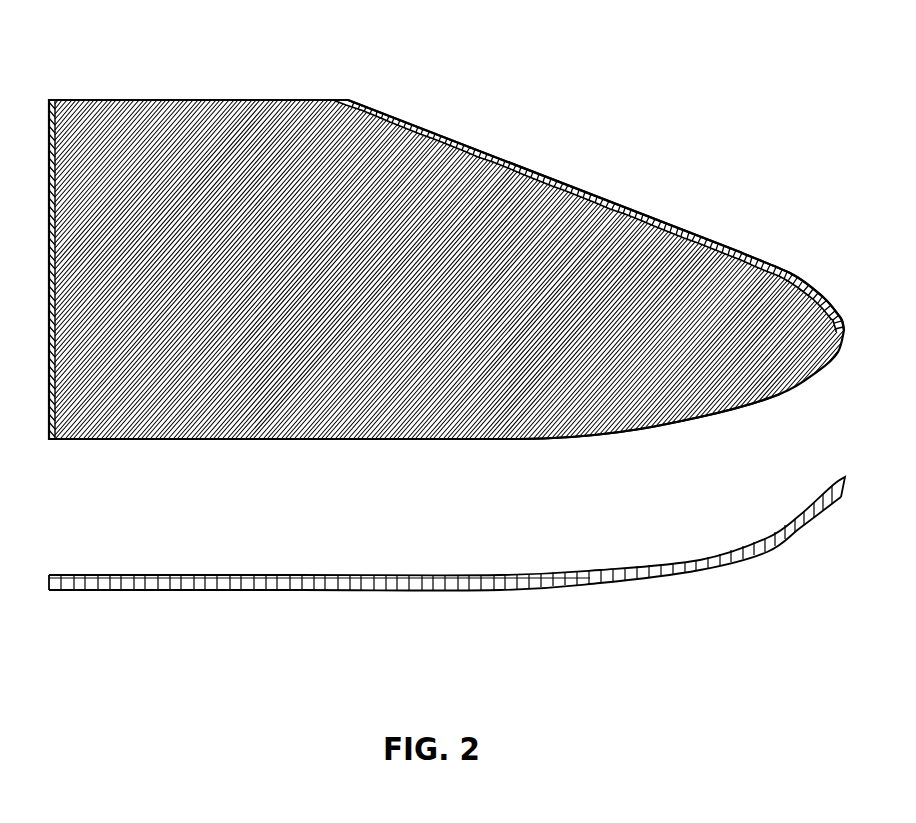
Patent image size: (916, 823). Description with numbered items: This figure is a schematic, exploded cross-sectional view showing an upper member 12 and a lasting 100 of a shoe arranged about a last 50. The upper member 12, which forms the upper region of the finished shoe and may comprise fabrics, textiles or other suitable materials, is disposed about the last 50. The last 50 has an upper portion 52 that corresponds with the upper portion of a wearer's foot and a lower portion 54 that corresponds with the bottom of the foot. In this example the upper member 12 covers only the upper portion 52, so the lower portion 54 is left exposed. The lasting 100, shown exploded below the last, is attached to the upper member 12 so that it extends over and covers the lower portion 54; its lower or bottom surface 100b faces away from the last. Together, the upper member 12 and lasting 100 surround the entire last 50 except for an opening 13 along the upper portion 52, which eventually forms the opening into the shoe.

The upper member 12 is at (595, 195).
The opening 13 is at (85, 90).
The last 50 is at (285, 100).
The upper portion 52 is at (468, 137).
The lower portion 54 is at (360, 447).
The lasting 100 is at (838, 518).
The bottom surface 100b is at (523, 592).